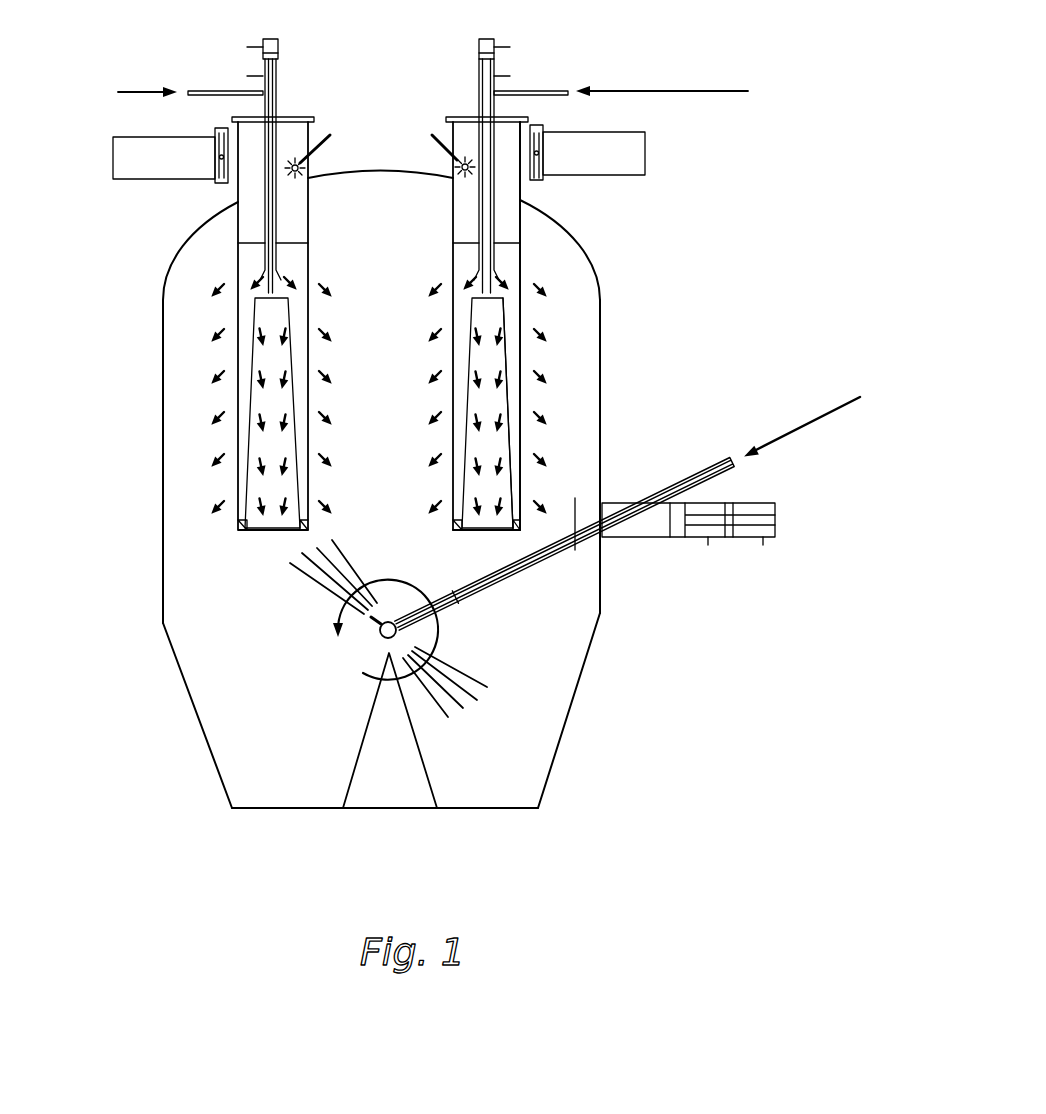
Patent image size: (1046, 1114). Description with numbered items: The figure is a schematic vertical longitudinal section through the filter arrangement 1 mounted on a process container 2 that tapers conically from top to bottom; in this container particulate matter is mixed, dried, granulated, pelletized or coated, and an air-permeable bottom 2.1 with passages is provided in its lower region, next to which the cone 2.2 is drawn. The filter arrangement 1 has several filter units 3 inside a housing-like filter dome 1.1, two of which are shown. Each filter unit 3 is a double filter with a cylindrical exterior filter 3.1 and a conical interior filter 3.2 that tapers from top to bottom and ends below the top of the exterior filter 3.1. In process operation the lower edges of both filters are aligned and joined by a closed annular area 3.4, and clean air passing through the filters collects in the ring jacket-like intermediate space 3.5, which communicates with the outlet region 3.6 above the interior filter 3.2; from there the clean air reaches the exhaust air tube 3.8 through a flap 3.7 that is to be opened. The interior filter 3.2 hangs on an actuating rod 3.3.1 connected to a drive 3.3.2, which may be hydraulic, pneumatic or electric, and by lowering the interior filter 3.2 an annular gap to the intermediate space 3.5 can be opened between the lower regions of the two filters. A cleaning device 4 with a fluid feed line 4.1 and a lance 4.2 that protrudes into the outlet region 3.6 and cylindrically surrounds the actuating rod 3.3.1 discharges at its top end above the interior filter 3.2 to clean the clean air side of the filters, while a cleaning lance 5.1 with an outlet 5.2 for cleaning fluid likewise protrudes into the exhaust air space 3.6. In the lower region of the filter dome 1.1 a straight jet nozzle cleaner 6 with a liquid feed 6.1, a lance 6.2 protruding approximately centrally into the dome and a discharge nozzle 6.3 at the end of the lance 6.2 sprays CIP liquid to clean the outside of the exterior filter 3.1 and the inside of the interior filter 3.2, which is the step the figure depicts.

The filter arrangement 1 is at (155, 399).
The filter dome 1.1 is at (582, 373).
The process container 2 is at (165, 685).
The bottom 2.1 is at (278, 809).
The cone 2.2 is at (428, 778).
The filter unit 3 is at (556, 236).
The exterior filter 3.1 is at (523, 282).
The interior filter 3.2 is at (506, 317).
The actuating rod 3.3.1 is at (280, 108).
The drive 3.3.2 is at (280, 44).
The closed annular area 3.4 is at (522, 525).
The intermediate space 3.5 is at (512, 343).
The outlet region 3.6 is at (505, 195).
The flap 3.7 is at (550, 135).
The exhaust air tube 3.8 is at (636, 150).
The cleaning device 4 is at (224, 70).
The fluid feed line 4.1 is at (199, 97).
The lance 4.2 is at (260, 176).
The cleaning lance 5.1 is at (333, 142).
The outlet 5.2 is at (307, 172).
The straight jet nozzle cleaner 6 is at (550, 567).
The liquid feed 6.1 is at (700, 462).
The lance 6.2 is at (465, 593).
The discharge nozzle 6.3 is at (433, 633).